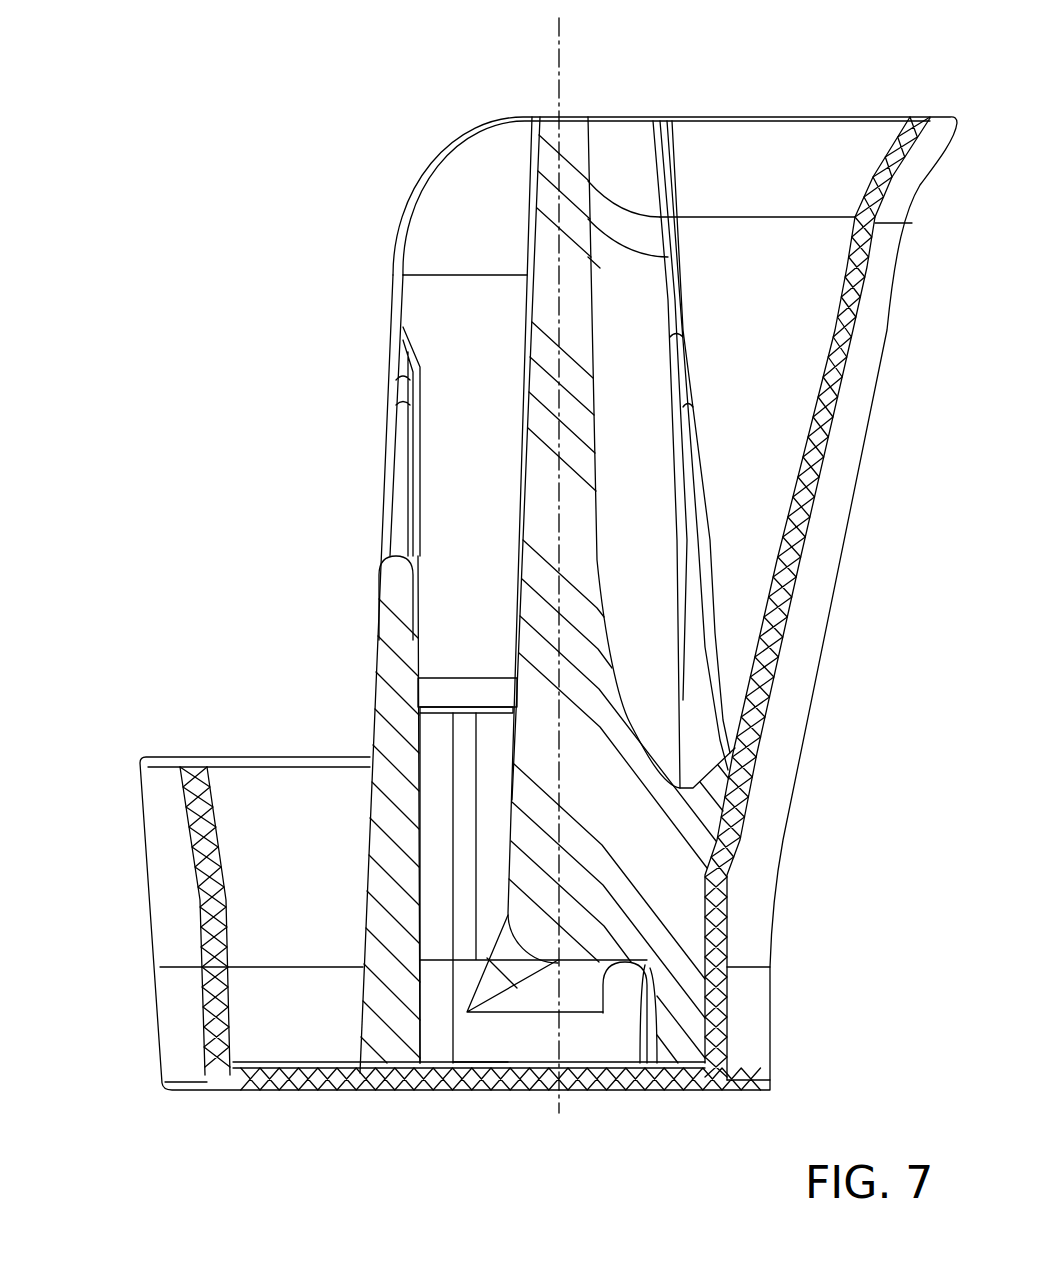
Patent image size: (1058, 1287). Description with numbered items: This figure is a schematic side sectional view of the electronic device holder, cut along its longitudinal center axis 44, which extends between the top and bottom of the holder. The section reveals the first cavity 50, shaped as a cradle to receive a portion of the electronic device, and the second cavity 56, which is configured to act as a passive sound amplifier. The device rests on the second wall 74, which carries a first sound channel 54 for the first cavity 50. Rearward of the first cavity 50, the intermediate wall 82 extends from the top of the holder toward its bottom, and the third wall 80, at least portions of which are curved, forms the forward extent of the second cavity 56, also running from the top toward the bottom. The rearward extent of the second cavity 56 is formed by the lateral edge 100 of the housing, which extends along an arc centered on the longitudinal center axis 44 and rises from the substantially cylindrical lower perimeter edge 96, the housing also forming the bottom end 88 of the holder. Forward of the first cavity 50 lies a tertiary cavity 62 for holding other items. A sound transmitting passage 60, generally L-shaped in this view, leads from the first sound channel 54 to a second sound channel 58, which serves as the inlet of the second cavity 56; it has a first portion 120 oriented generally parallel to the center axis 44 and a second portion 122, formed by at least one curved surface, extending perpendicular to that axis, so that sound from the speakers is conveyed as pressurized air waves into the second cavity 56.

The longitudinal center axis 44 is at (567, 50).
The first cavity 50 is at (437, 231).
The second cavity 56 is at (768, 162).
The lateral edge 100 is at (816, 444).
The intermediate wall 82 is at (553, 510).
The third wall 80 is at (708, 640).
The second wall 74 is at (473, 678).
The first sound channel 54 is at (473, 705).
The first portion 120 is at (453, 882).
The lower perimeter edge 96 is at (330, 790).
The tertiary cavity 62 is at (273, 805).
The bottom end 88 is at (356, 1095).
The sound transmitting passage 60 is at (496, 1038).
The second sound channel 58 is at (604, 1025).
The second portion 122 is at (480, 1058).